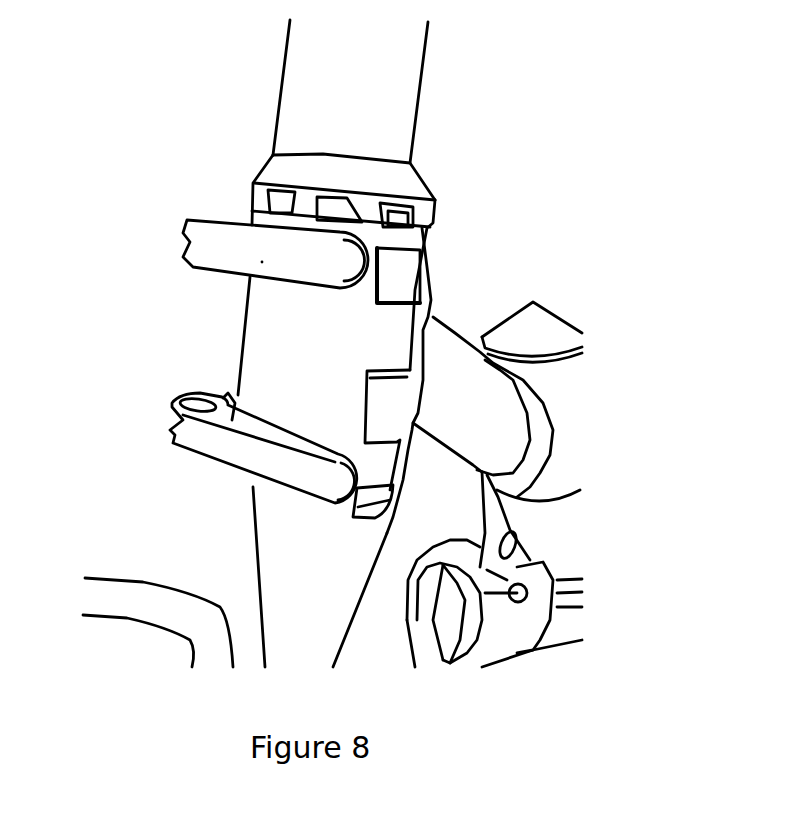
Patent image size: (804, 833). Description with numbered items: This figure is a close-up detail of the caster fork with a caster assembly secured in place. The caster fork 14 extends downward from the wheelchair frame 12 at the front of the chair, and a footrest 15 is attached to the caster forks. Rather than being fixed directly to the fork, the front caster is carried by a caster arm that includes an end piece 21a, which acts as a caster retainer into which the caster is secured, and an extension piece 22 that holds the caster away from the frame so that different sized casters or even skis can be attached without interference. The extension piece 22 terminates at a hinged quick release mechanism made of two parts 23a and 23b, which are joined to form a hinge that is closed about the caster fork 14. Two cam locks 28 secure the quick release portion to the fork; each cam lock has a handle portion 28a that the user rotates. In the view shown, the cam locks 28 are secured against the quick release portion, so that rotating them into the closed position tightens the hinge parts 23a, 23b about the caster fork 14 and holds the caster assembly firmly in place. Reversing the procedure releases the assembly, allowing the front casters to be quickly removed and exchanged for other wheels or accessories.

The frame 12 is at (273, 100).
The caster fork 14 is at (260, 590).
The footrest 15 is at (147, 610).
The end piece 21a is at (555, 328).
The extension piece 22 is at (443, 367).
The first part of quick release portion 23a is at (262, 323).
The second part of quick release portion 23b is at (425, 313).
The cam lock 28 is at (217, 255).
The handle portion 28a is at (275, 250).